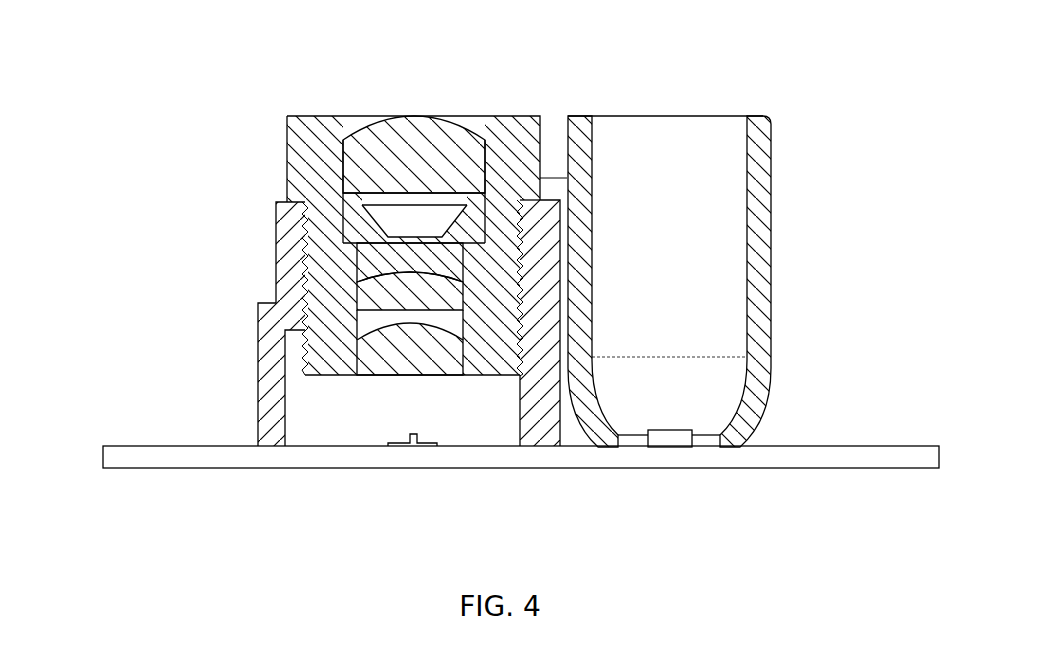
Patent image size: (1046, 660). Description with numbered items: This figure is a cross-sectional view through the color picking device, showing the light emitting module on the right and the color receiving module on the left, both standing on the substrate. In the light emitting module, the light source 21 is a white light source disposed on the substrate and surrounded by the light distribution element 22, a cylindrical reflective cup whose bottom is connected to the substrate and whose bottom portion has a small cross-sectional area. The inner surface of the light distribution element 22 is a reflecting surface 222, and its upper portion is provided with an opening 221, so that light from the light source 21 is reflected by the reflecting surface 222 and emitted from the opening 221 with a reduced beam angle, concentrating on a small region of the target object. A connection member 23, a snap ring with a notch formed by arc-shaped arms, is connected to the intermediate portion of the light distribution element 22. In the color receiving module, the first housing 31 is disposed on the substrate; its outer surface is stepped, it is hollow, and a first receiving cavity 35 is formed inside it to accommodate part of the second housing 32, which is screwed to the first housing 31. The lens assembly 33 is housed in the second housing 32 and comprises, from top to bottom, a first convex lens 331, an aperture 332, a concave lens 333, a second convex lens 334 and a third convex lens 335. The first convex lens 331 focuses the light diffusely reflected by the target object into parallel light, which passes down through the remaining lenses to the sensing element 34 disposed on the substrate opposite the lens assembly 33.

The light source 21 is at (670, 430).
The light distribution element 22 is at (746, 243).
The opening 221 is at (707, 116).
The reflecting surface 222 is at (592, 282).
The connection member 23 is at (553, 188).
The first housing 31 is at (277, 433).
The second housing 32 is at (512, 143).
The lens assembly 33 is at (130, 98).
The first convex lens 331 is at (368, 175).
The aperture 332 is at (350, 223).
The concave lens 333 is at (360, 262).
The second convex lens 334 is at (382, 300).
The third convex lens 335 is at (367, 368).
The sensing element 34 is at (413, 437).
The first receiving cavity 35 is at (330, 420).